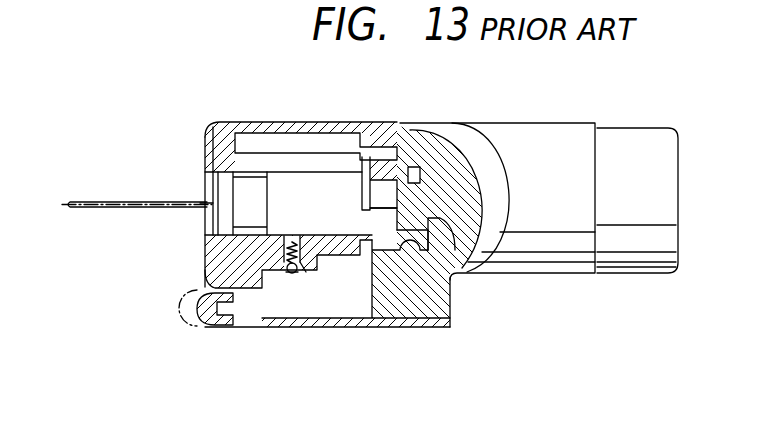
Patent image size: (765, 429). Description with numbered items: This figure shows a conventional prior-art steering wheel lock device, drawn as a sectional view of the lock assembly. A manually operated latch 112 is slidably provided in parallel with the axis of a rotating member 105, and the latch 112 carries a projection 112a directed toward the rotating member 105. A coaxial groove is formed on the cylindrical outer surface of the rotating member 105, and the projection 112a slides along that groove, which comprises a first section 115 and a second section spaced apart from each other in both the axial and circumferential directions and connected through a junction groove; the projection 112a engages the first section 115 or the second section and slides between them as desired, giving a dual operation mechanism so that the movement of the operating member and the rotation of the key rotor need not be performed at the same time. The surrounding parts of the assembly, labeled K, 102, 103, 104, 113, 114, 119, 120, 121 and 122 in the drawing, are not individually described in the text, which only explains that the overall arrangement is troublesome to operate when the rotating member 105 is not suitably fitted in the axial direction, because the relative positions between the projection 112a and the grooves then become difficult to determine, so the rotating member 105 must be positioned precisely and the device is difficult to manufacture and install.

The optical fiber K is at (105, 195).
The cap body 102 is at (503, 147).
The housing sleeve 103 is at (290, 180).
The end cap 104 is at (632, 163).
The rotating member 105 is at (388, 152).
The latch 112 is at (366, 305).
The projection 112a is at (420, 300).
The ferrule holder 113 is at (205, 257).
The latch 114 is at (203, 325).
The first section 115 is at (450, 300).
The ball seat 119 is at (303, 270).
The ball 120 is at (292, 280).
The spring 121 is at (290, 242).
The retainer 122 is at (289, 270).